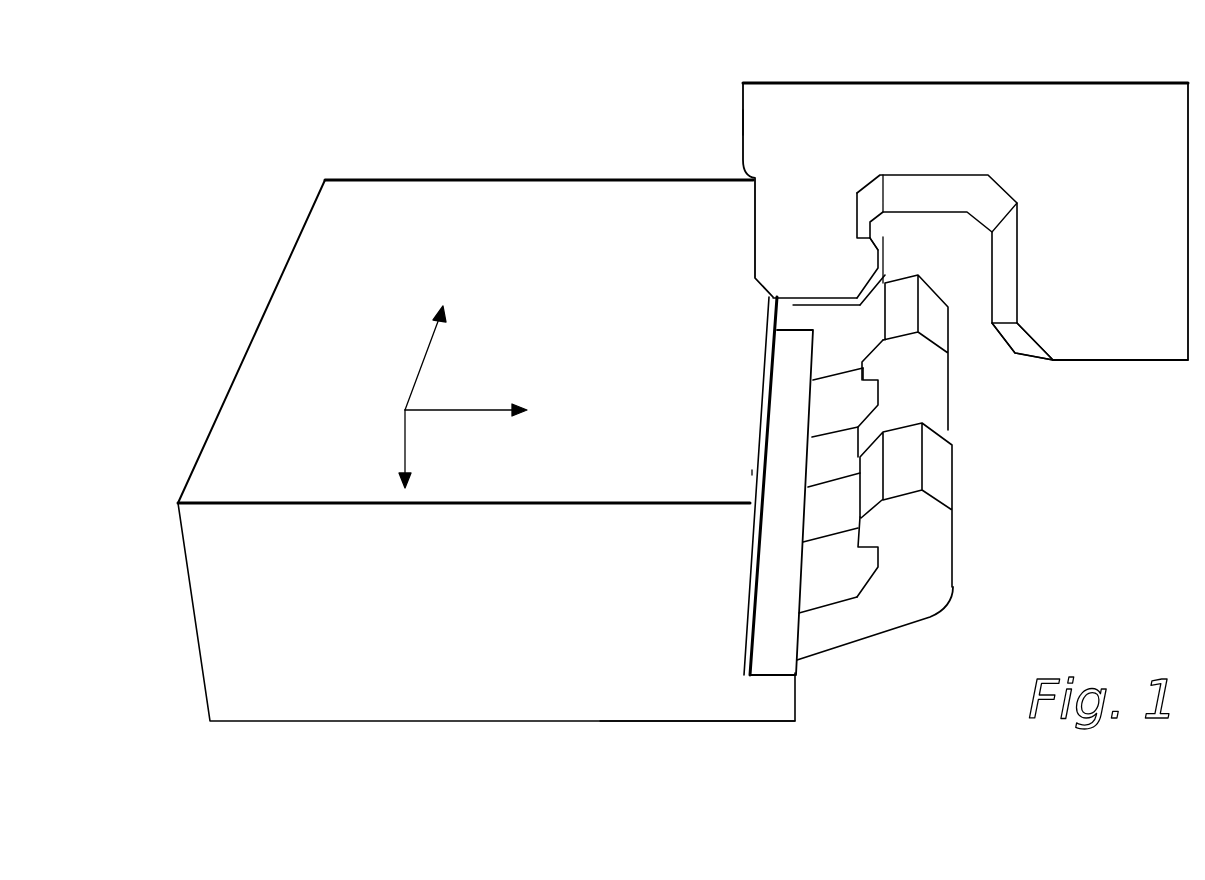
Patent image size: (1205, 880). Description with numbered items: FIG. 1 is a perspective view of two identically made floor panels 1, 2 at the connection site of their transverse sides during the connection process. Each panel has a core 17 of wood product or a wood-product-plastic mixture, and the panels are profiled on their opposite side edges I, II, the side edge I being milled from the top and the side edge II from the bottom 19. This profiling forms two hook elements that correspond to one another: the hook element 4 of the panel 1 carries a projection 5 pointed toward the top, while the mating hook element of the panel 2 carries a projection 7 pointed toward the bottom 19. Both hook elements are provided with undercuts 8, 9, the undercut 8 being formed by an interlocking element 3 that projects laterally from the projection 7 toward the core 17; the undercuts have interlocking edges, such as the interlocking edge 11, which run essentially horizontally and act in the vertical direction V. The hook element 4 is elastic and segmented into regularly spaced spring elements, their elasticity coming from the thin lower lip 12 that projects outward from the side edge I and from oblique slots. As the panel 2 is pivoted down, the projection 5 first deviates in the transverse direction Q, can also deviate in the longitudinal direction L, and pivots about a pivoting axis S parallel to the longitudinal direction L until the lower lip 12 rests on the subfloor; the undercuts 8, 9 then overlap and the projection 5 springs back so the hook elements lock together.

The panel 1 is at (473, 620).
The panel 2 is at (1113, 178).
The interlocking element 3 is at (882, 258).
The hook element 4 is at (902, 650).
The projection 5 is at (921, 393).
The projection 7 is at (818, 260).
The undercut 8 is at (882, 231).
The undercut 9 is at (868, 562).
The interlocking edge 11 is at (743, 122).
The lower lip 12 is at (825, 637).
The core 17 is at (1112, 337).
The bottom 19 is at (1057, 372).
The pivoting axis S is at (797, 655).
The side edge I is at (752, 470).
The longitudinal direction L is at (423, 358).
The transverse direction Q is at (475, 425).
The vertical direction V is at (415, 452).